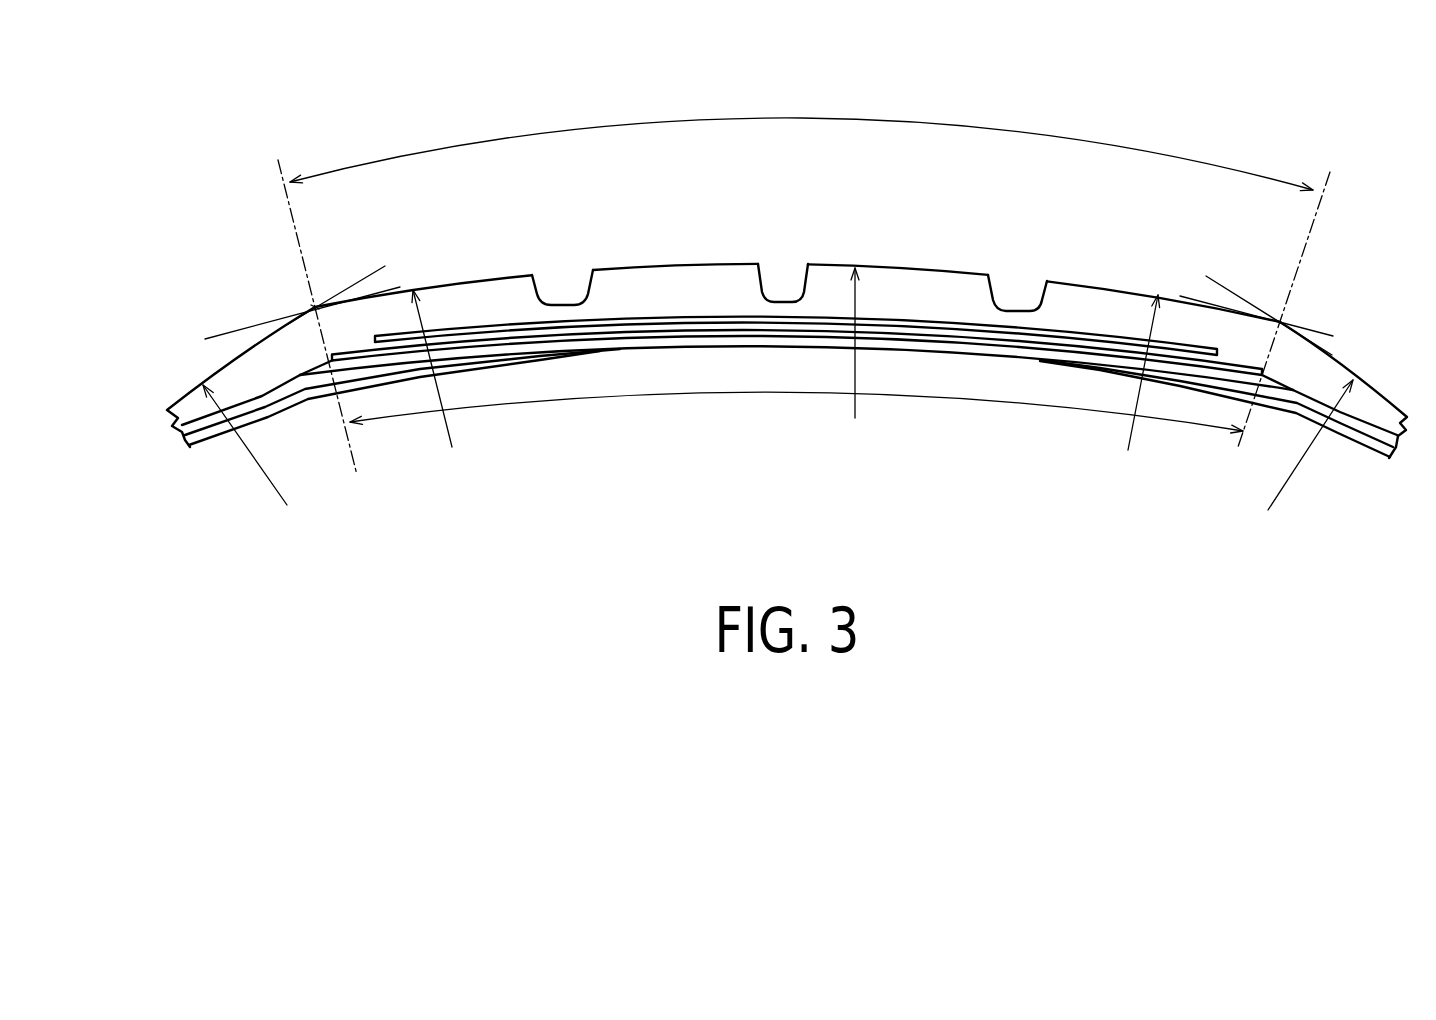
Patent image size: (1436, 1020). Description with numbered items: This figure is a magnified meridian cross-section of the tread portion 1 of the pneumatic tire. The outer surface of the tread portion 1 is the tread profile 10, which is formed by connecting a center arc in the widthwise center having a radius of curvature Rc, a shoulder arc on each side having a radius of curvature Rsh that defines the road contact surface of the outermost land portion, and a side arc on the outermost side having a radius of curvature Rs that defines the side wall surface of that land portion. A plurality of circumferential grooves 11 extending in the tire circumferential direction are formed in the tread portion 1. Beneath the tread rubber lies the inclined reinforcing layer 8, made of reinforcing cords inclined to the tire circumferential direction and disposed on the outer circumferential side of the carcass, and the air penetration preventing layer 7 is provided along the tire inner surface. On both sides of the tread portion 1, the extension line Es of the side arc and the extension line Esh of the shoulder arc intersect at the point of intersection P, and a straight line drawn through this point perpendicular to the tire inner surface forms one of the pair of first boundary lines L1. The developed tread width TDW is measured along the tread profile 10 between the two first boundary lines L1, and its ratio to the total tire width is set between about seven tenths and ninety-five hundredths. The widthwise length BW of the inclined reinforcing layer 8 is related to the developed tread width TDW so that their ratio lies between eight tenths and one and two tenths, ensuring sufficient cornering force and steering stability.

The tread portion 1 is at (930, 268).
The air penetration preventing layer 7 is at (763, 349).
The inclined reinforcing layer 8 is at (1092, 349).
The tread profile 10 is at (633, 267).
The circumferential grooves 11 is at (540, 275).
The developed tread width TDW is at (801, 139).
The first boundary lines L1 is at (300, 250).
The extension line of the side arc Es is at (367, 278).
The extension line of the shoulder arc Esh is at (220, 333).
The point of intersection P is at (310, 303).
The radius of curvature of the shoulder arc Rsh is at (787, 388).
The radius of curvature of the center arc Rc is at (860, 363).
The radius of curvature of the side arc Rs is at (778, 464).
The length of the inclined reinforcing layer in the tire width direction BW is at (796, 412).